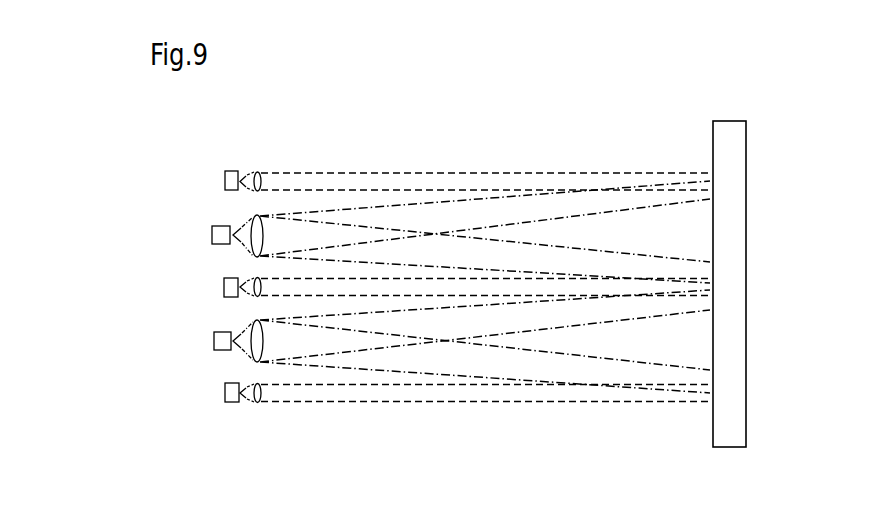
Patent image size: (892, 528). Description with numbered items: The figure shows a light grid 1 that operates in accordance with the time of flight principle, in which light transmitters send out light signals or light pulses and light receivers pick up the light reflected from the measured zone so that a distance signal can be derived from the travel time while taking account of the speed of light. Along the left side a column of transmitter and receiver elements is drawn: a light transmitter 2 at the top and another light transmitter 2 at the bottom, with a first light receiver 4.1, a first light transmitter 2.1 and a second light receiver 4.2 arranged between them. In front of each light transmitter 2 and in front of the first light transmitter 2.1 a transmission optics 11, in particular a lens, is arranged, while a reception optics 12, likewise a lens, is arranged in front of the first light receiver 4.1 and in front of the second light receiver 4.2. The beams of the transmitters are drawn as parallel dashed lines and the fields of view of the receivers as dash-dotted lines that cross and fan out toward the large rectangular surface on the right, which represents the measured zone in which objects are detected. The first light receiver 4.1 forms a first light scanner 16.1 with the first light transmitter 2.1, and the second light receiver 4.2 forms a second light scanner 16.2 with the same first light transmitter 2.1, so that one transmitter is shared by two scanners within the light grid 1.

The light grid 1 is at (430, 94).
The light transmitter 2 is at (226, 172).
The first light transmitter 2.1 is at (225, 282).
The first light receiver 4.1 is at (212, 229).
The second light receiver 4.2 is at (214, 339).
The transmission optics 11 is at (259, 175).
The reception optics 12 is at (260, 218).
The first light scanner 16.1 is at (191, 268).
The second light scanner 16.2 is at (194, 303).